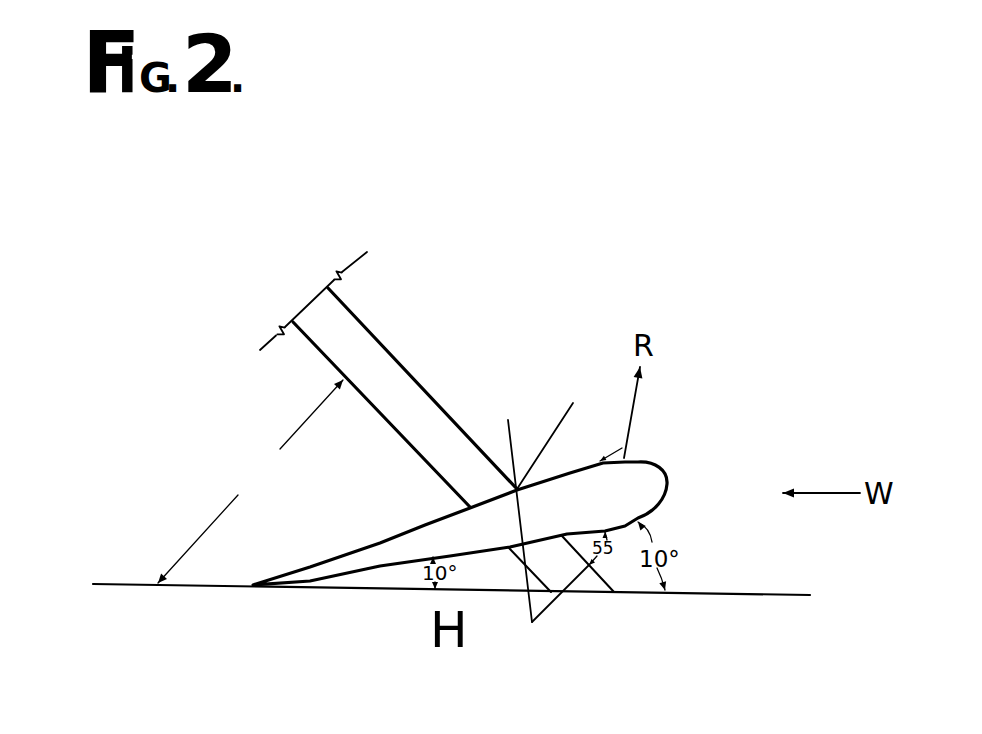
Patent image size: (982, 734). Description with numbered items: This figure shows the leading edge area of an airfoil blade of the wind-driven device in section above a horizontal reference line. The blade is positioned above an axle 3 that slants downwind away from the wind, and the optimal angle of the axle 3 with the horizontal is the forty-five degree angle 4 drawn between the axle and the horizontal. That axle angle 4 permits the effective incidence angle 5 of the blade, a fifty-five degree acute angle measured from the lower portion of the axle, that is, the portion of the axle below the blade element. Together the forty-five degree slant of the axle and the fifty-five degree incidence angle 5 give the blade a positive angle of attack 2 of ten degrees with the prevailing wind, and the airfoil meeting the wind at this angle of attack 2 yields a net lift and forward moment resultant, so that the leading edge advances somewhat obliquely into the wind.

The positive angle of attack 2 is at (680, 557).
The axle 3 is at (437, 422).
The 45 degree angle 4 is at (213, 475).
The effective incidence angle 5 is at (557, 423).